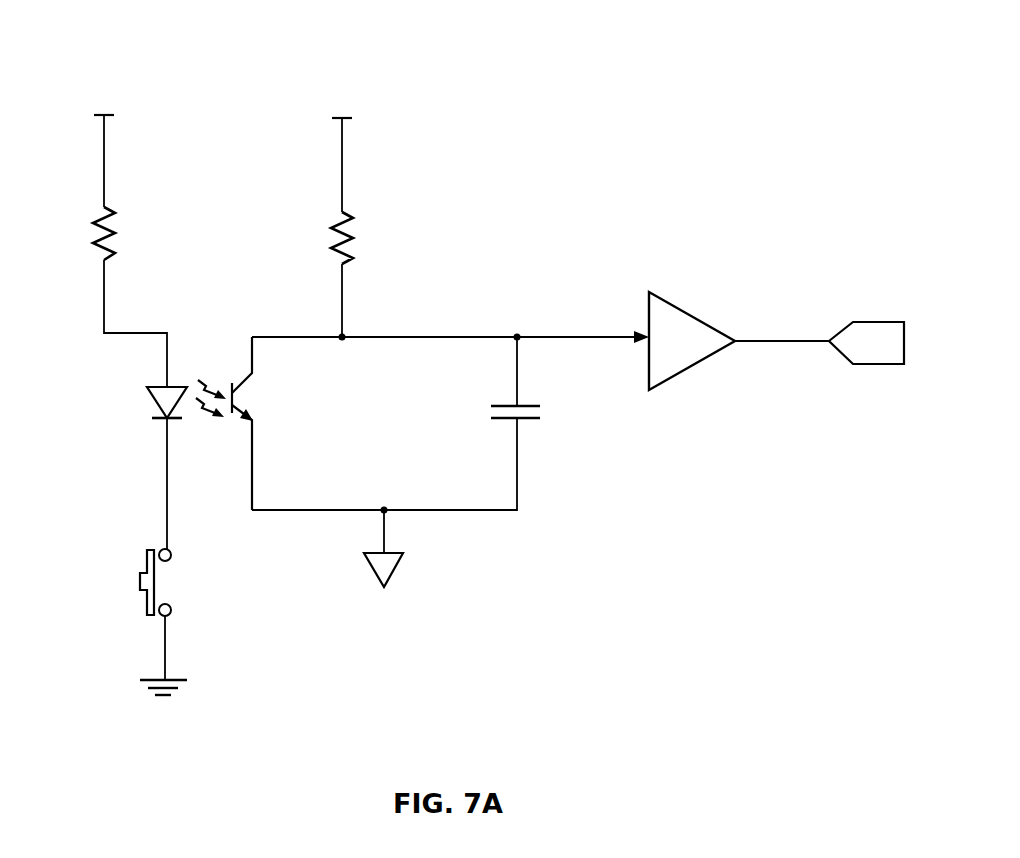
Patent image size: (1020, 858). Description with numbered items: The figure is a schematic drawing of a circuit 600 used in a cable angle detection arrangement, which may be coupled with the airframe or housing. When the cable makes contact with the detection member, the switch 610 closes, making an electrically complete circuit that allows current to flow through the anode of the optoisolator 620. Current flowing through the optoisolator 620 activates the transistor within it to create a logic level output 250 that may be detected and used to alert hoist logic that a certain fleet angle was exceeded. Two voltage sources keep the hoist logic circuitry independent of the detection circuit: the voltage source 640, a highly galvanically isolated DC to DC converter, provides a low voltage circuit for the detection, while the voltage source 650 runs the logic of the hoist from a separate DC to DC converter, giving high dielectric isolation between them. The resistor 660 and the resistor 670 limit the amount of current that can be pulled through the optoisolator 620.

The circuit 600 is at (458, 88).
The voltage source 640 is at (84, 161).
The resistor 660 is at (78, 233).
The optoisolator 620 is at (142, 401).
The switch 610 is at (130, 582).
The voltage source 650 is at (368, 164).
The resistor 670 is at (367, 238).
The logic level output 250 is at (885, 321).